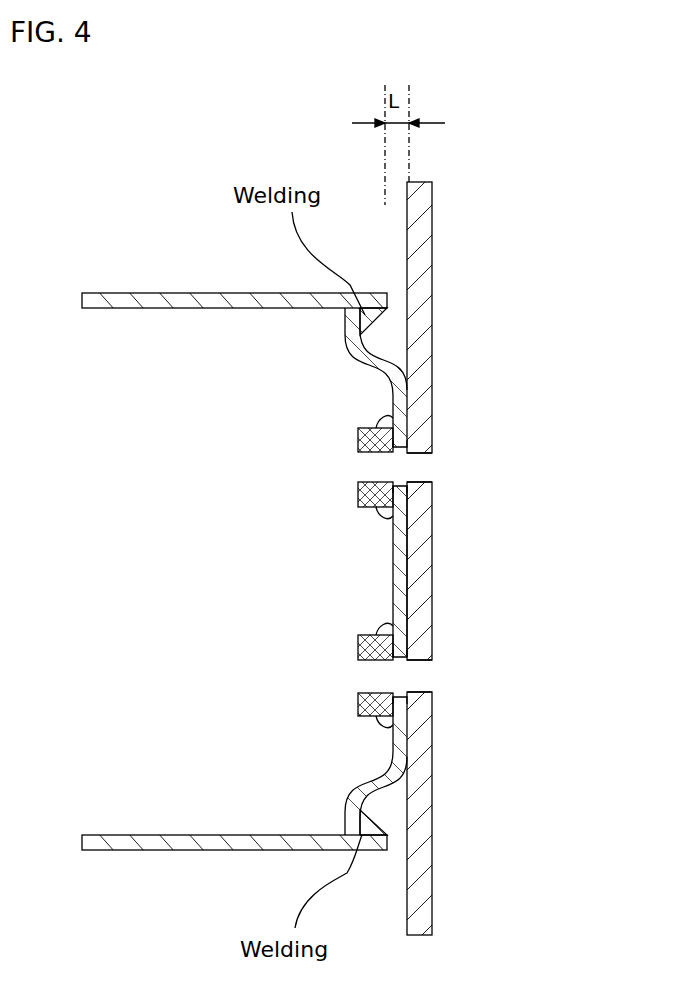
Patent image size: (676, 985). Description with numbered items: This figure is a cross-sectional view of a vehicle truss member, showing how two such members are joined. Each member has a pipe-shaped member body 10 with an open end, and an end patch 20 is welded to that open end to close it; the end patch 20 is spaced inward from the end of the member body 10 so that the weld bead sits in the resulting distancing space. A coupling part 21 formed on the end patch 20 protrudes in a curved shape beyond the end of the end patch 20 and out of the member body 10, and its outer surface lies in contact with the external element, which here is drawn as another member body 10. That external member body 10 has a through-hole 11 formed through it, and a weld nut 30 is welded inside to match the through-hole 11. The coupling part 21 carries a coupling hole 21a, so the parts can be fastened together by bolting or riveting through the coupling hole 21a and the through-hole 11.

The member body 10 is at (440, 830).
The through-hole 11 is at (426, 474).
The end patch 20 is at (346, 351).
The coupling part 21 is at (393, 568).
The coupling hole 21a is at (398, 468).
The weld nut 30 is at (358, 497).